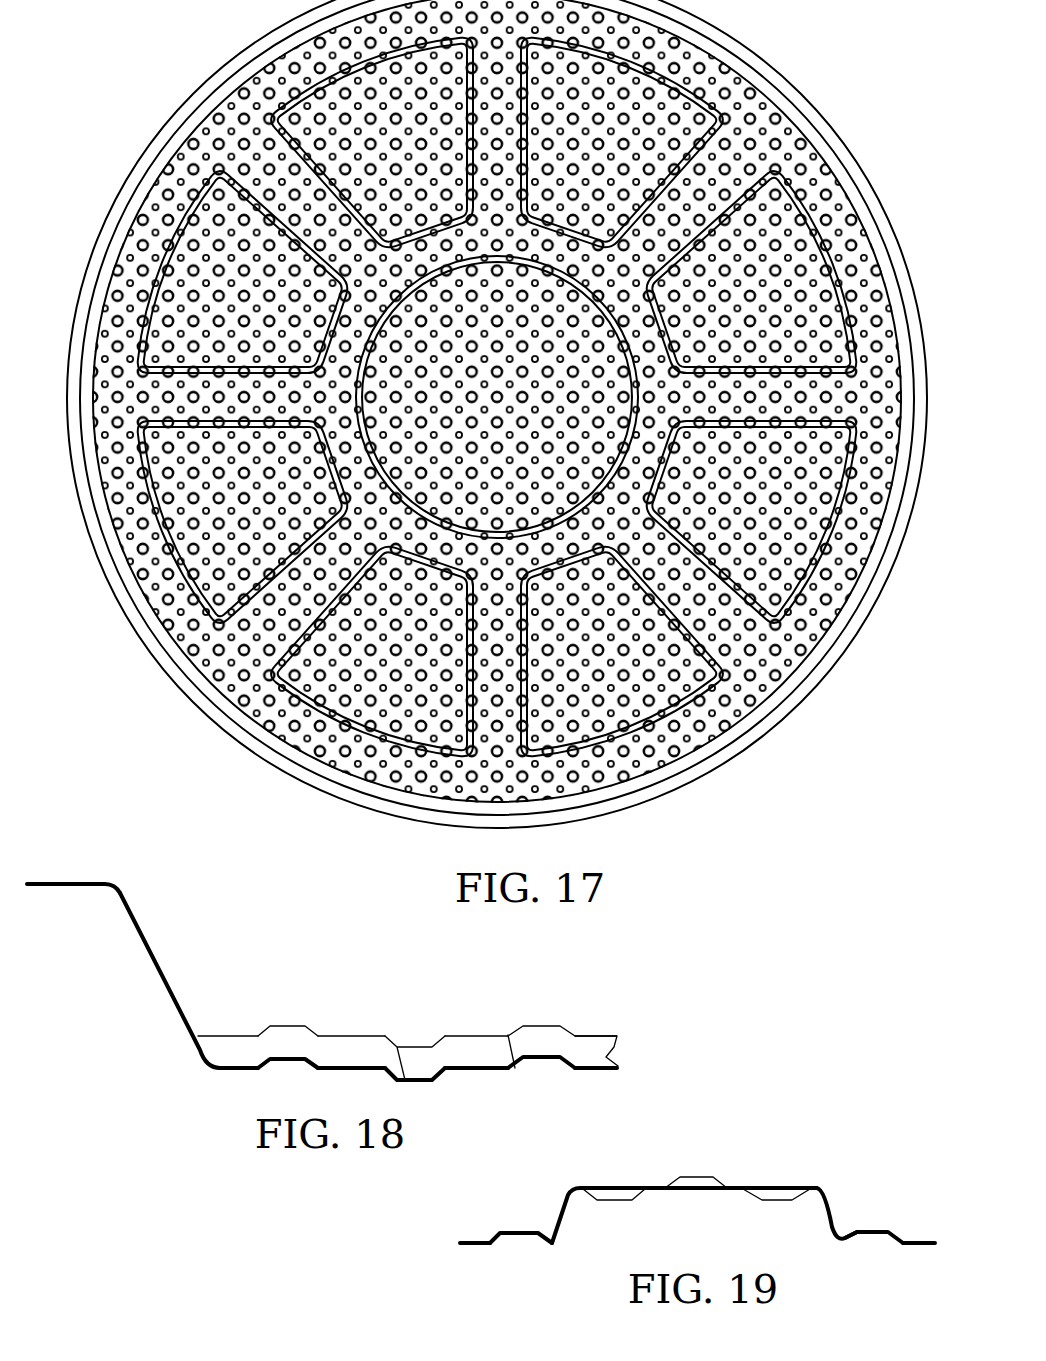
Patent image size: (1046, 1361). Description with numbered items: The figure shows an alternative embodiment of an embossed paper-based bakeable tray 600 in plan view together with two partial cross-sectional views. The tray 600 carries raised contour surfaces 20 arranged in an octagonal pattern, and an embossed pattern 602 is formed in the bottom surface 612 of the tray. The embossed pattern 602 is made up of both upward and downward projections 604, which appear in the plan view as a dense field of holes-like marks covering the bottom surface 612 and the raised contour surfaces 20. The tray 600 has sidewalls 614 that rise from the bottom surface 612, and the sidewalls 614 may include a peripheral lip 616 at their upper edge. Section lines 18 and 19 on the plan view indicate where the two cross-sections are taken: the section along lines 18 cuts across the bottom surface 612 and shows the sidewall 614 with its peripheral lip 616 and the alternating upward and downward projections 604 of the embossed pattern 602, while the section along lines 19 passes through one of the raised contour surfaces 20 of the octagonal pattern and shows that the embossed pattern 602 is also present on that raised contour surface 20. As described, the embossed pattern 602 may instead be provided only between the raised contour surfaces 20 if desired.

In FIG. 17, the embossed paper-based bakeable tray 600 is at (502, 414).
In FIG. 17, the embossed pattern 602 is at (232, 115).
In FIG. 18, the upward and downward projections 604 is at (427, 1043).
In FIG. 19, the upward and downward projections 604 is at (698, 1177).
In FIG. 18, the bottom surface 612 is at (373, 943).
In FIG. 19, the bottom surface 612 is at (667, 1175).
In FIG. 18, the sidewalls 614 is at (150, 957).
In FIG. 18, the peripheral lip 616 is at (100, 882).
In FIG. 18, the raised contour surfaces 20 is at (607, 1058).
In FIG. 19, the raised contour surfaces 20 is at (822, 1187).
In FIG. 17, the section line 18- 18 is at (157, 355).
In FIG. 17, the section line 19- 19 is at (726, 540).